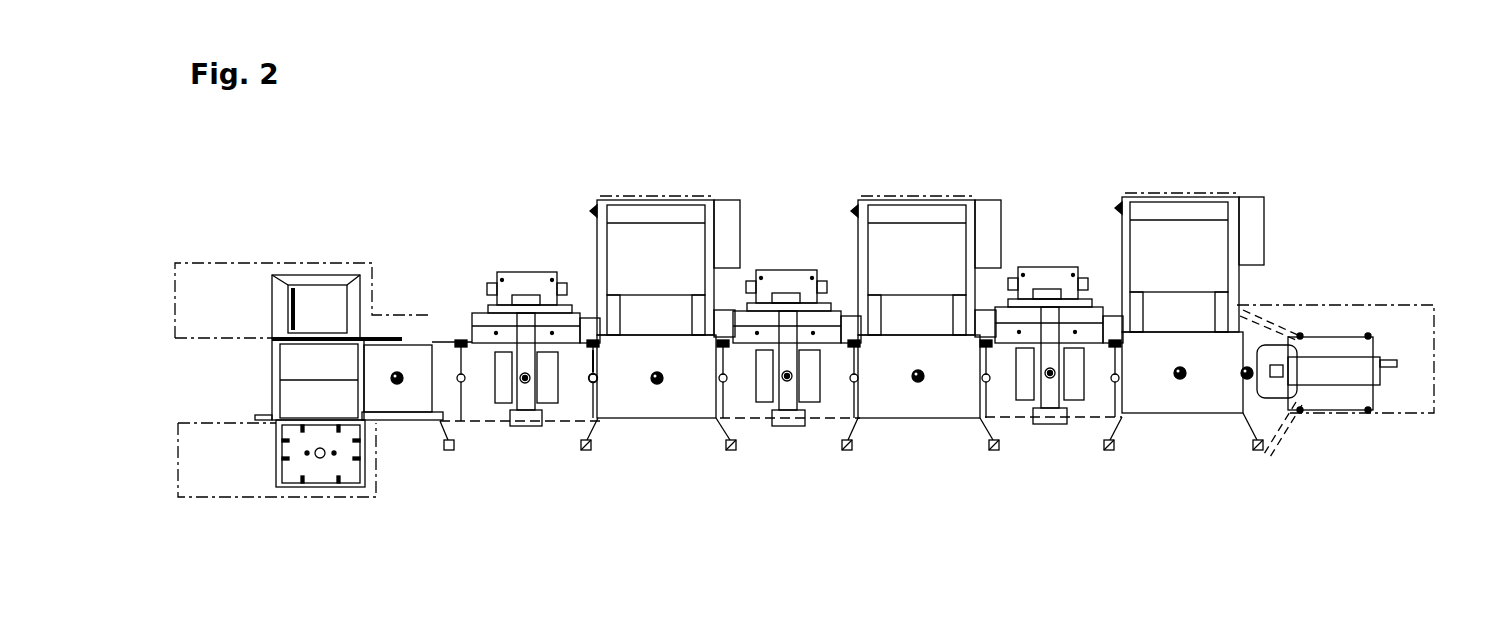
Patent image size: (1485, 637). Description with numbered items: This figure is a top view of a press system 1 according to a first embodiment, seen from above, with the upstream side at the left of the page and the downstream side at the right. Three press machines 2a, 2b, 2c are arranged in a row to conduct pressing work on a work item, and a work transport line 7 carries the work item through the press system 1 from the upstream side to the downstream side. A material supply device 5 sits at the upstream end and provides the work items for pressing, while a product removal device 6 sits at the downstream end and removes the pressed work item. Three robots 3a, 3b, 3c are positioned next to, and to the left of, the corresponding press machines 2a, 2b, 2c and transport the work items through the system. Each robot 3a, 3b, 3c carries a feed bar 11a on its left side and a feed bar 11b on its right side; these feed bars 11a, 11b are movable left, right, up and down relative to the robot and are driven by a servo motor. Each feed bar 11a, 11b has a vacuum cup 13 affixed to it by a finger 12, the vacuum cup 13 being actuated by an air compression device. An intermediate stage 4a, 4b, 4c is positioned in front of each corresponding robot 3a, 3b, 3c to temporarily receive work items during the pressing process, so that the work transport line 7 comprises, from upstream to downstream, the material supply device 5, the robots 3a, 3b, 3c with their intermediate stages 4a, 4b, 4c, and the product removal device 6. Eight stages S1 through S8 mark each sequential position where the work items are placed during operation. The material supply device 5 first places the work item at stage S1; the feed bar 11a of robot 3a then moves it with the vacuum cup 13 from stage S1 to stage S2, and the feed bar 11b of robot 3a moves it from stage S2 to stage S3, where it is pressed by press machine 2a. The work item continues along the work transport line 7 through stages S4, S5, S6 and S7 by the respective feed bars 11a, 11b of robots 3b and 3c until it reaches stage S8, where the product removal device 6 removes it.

The press system 1 is at (741, 132).
The press machine 2a is at (651, 212).
The press machine 2b is at (913, 212).
The press machine 2c is at (1174, 207).
The robot 3a is at (513, 270).
The robot 3b is at (784, 262).
The robot 3c is at (1046, 262).
The intermediate stage 4a is at (552, 390).
The intermediate stage 4b is at (812, 390).
The intermediate stage 4c is at (1072, 388).
The material supply device 5 is at (316, 286).
The product removal device 6 is at (1316, 298).
The work transport line 7 is at (1446, 374).
The feed bar 11a is at (474, 336).
The feed bar 11b is at (583, 340).
The finger 12 is at (474, 360).
The vacuum cup 13 is at (462, 374).
The stage S1 is at (398, 384).
The stage S2 is at (524, 384).
The stage S3 is at (655, 384).
The stage S4 is at (785, 384).
The stage S5 is at (916, 383).
The stage S6 is at (1049, 382).
The stage S7 is at (1180, 380).
The stage S8 is at (1246, 380).